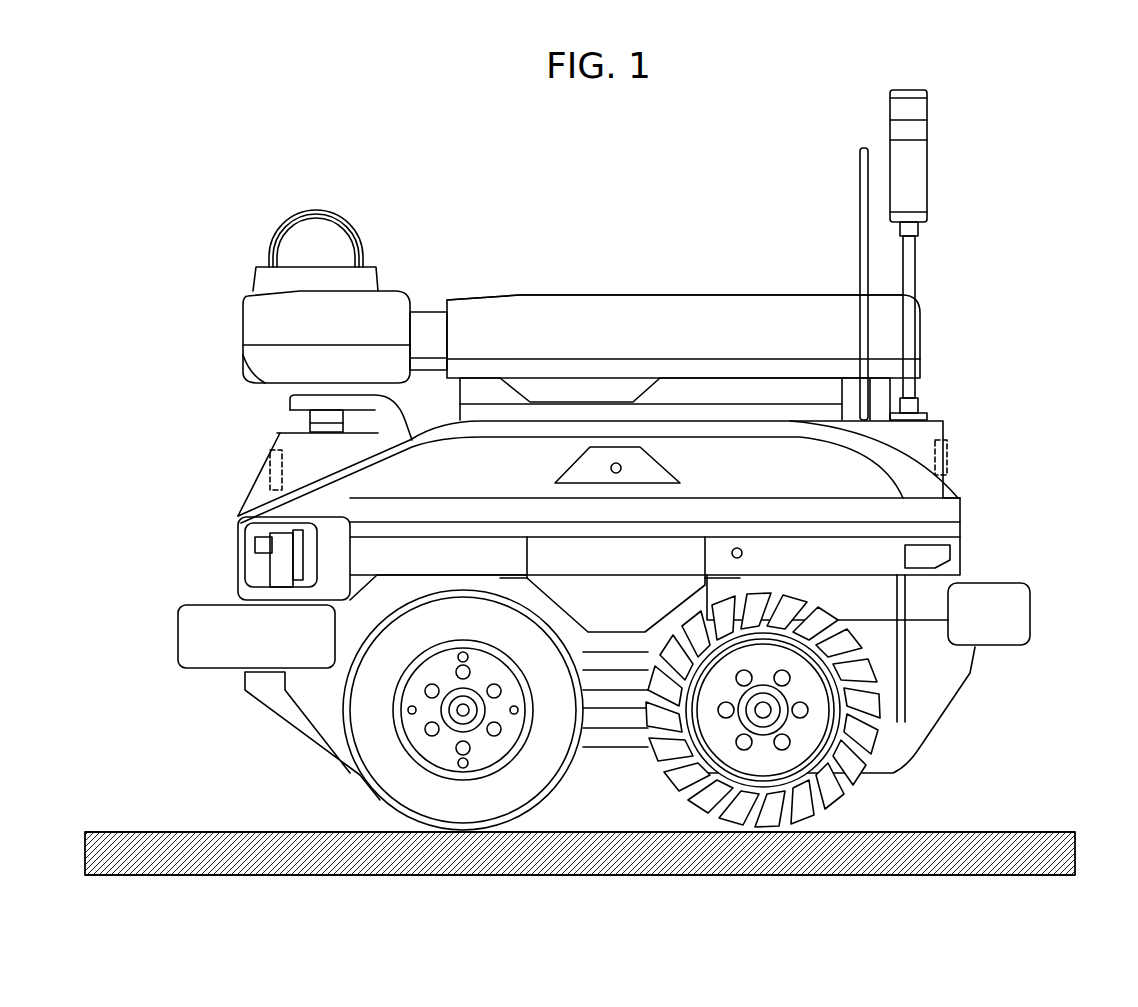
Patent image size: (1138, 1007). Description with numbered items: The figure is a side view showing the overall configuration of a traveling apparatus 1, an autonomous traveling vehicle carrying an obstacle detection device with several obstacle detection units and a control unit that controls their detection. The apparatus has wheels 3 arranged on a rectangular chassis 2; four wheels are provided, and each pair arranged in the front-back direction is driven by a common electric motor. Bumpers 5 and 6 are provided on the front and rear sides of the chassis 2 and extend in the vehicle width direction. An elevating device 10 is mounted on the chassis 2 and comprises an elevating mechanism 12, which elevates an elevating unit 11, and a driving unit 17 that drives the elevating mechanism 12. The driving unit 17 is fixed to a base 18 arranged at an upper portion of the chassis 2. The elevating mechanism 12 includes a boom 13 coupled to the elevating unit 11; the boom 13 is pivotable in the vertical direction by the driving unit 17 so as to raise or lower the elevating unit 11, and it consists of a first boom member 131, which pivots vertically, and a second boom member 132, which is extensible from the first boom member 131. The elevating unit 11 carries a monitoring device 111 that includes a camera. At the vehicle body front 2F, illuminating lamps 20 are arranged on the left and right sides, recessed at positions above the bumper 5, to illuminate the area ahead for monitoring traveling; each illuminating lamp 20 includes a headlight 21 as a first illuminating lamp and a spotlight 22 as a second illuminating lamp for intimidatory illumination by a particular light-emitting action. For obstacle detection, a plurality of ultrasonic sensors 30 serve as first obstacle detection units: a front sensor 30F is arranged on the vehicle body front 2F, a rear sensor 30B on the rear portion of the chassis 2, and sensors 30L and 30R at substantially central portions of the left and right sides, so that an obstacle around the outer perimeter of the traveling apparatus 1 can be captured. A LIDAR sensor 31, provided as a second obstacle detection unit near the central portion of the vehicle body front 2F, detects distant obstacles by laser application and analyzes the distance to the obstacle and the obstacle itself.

The traveling apparatus 1 is at (992, 152).
The chassis 2 is at (966, 491).
The vehicle body front 2F is at (236, 506).
The wheels 3 is at (465, 820).
The bumper 5 is at (187, 638).
The bumper 6 is at (1015, 611).
The elevating device 10 is at (944, 299).
The elevating unit 11 is at (252, 312).
The monitoring device 111 is at (316, 232).
The elevating mechanism 12 is at (727, 297).
The boom 13 is at (616, 296).
The first boom member 131 is at (547, 297).
The second boom member 132 is at (428, 318).
The driving unit 17 is at (890, 382).
The base 18 is at (926, 412).
The illuminating lamps 20 is at (247, 565).
The headlight 21 is at (283, 565).
The spotlight 22 is at (296, 555).
The ultrasonic sensors 30 is at (612, 614).
The ultrasonic sensor 30F is at (255, 548).
The ultrasonic sensor 30B is at (948, 448).
The ultrasonic sensor 30L is at (737, 546).
The ultrasonic sensor 30R is at (737, 553).
The LIDAR sensor 31 is at (275, 470).